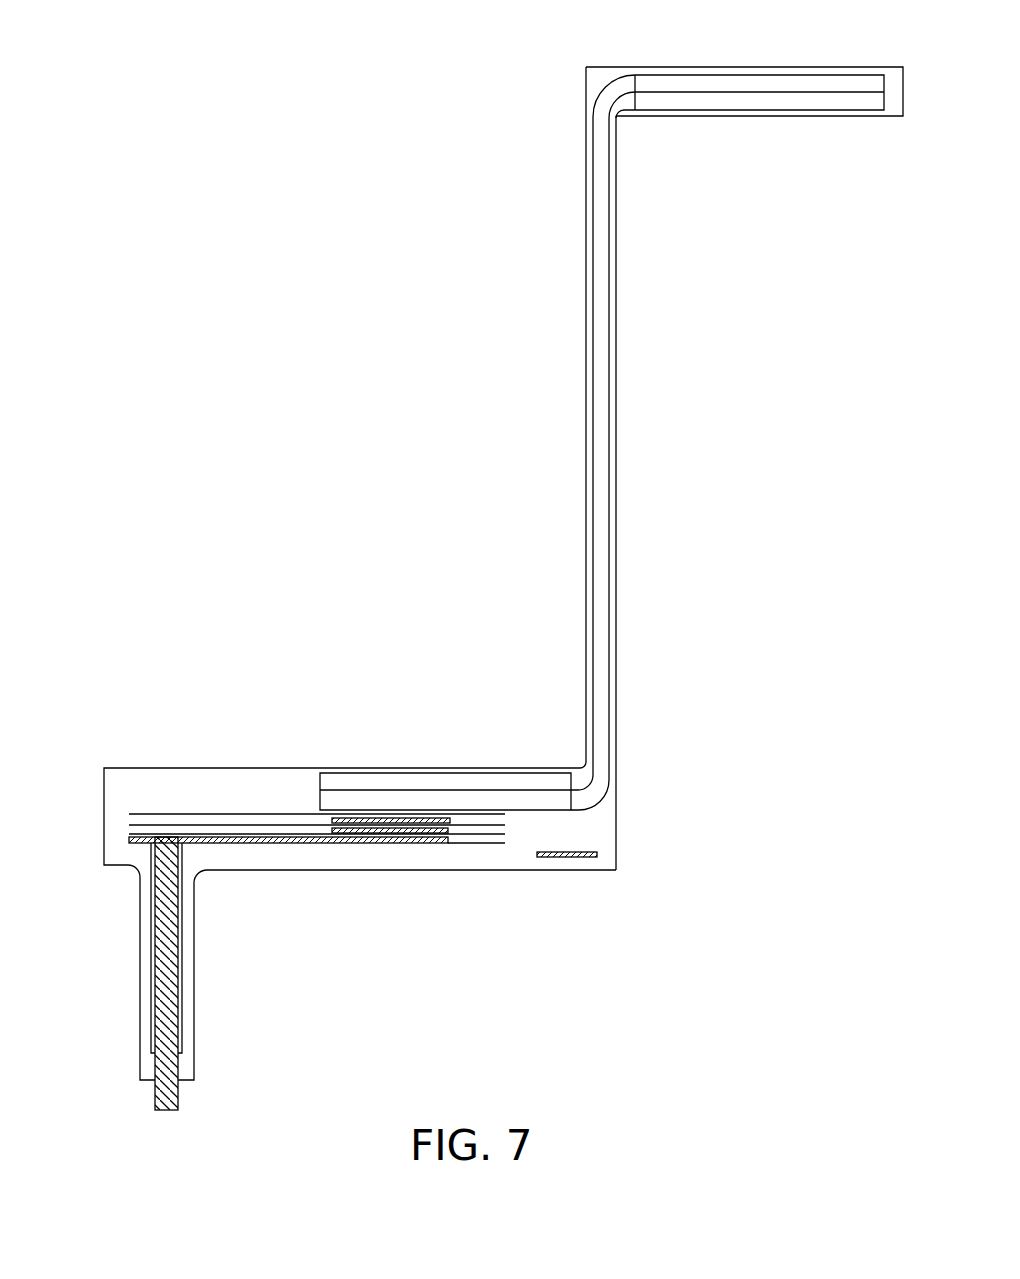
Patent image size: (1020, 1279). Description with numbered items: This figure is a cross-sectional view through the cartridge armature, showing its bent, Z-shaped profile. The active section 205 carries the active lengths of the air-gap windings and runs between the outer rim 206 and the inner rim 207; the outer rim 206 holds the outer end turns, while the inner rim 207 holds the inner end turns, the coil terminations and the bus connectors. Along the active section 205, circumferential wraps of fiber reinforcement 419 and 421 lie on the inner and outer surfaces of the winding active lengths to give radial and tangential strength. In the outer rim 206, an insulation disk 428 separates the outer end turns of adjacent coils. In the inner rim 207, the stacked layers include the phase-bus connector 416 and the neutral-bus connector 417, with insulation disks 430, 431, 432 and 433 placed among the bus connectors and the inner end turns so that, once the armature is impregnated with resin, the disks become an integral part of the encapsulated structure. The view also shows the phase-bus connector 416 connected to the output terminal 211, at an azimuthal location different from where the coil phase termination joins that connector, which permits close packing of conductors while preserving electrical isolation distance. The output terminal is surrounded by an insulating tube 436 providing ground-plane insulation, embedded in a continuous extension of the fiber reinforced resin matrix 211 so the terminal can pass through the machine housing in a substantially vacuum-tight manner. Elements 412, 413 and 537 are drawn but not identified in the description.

The active section 205 is at (600, 468).
The outer rim 206 is at (753, 92).
The inner rim 207 is at (112, 766).
The fiber reinforced resin matrix 211 is at (139, 934).
The connector body 412 is at (450, 777).
The cable termination 413 is at (522, 805).
The phase-bus connector 416 is at (396, 845).
The neutral-bus connector 417 is at (574, 861).
The circumferential wrap of fiber reinforcement 419 is at (586, 542).
The circumferential wrap of fiber reinforcement 421 is at (613, 535).
The insulation disk 428 is at (823, 99).
The insulation disk 430 is at (160, 811).
The insulation disk 431 is at (222, 821).
The insulation disk 432 is at (275, 831).
The insulation disk 433 is at (513, 846).
The insulating tube 436 is at (184, 977).
The contact strip 537 is at (251, 847).